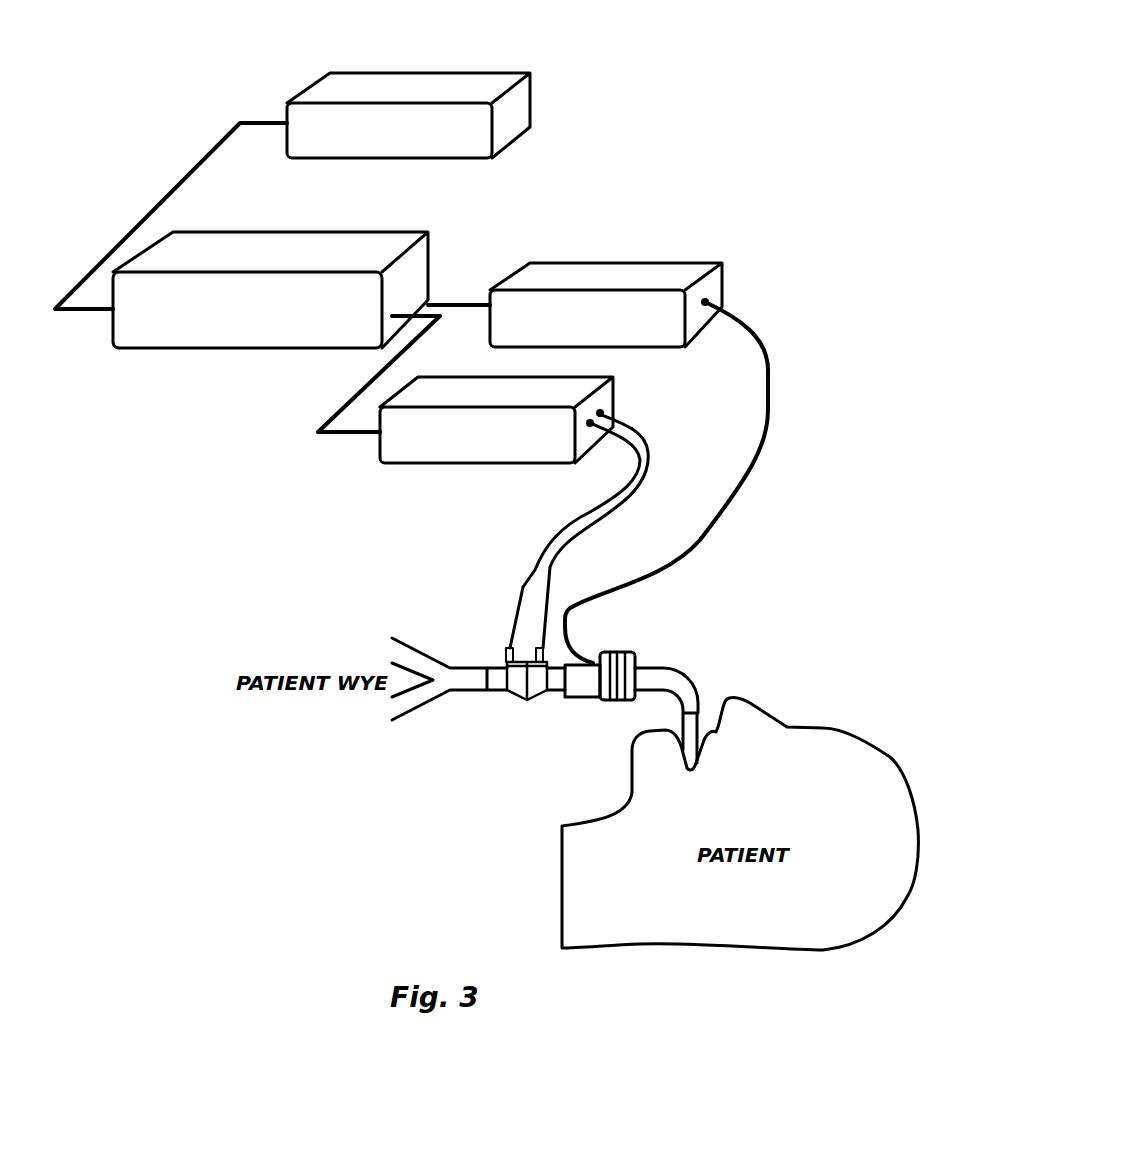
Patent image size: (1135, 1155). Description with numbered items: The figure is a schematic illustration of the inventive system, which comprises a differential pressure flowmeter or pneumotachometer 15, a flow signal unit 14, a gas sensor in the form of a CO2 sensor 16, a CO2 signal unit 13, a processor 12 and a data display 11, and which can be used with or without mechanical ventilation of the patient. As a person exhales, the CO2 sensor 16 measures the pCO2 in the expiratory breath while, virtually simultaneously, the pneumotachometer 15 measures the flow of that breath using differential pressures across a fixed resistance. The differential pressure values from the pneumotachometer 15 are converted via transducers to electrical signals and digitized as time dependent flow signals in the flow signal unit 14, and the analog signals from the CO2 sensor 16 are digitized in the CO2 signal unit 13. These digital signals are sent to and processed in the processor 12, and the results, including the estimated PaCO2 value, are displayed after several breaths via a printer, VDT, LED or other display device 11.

The data display 11 is at (411, 85).
The processor 12 is at (297, 252).
The CO2 signal unit 13 is at (622, 272).
The flow signal unit 14 is at (418, 452).
The pneumotachometer 15 is at (510, 702).
The CO2 sensor 16 is at (629, 672).